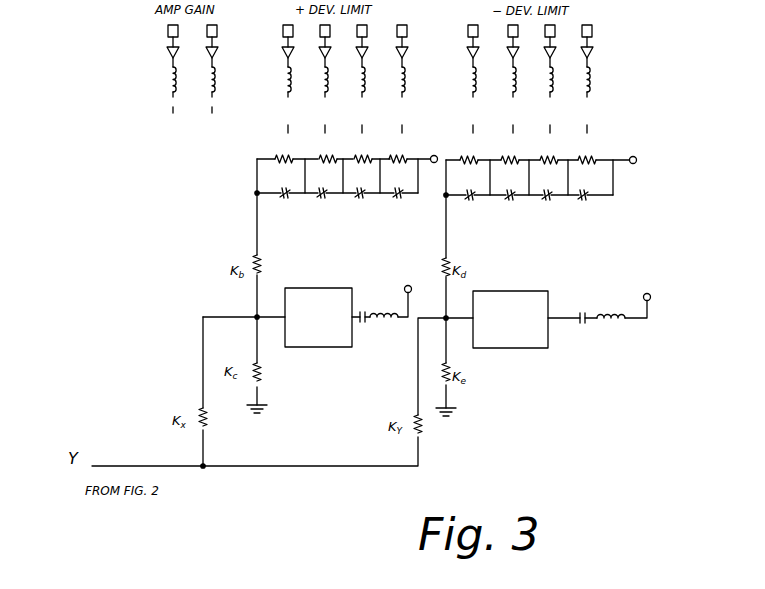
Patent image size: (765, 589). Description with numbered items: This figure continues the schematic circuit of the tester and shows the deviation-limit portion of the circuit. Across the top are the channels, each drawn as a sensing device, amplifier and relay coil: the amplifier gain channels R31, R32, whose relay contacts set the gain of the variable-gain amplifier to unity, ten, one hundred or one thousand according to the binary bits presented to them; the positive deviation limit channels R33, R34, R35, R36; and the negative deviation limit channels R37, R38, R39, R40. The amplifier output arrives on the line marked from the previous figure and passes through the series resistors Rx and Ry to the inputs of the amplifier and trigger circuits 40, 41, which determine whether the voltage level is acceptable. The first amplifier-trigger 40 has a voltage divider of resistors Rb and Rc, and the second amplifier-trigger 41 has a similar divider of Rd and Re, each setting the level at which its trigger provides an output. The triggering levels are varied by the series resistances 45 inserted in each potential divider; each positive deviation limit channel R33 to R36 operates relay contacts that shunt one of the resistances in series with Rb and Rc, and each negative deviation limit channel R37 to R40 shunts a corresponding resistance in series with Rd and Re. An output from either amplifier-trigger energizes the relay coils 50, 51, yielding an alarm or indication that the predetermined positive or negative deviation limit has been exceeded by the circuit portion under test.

The amplifier gain channel R31 is at (172, 81).
The amplifier gain channel R32 is at (212, 82).
The positive deviation limit channel R33 is at (287, 79).
The positive deviation limit channel R34 is at (324, 79).
The positive deviation limit channel R35 is at (361, 79).
The positive deviation limit channel R36 is at (401, 79).
The negative deviation limit channel R37 is at (472, 79).
The negative deviation limit channel R38 is at (512, 79).
The negative deviation limit channel R39 is at (549, 79).
The negative deviation limit channel R40 is at (586, 79).
The series resistances 45 is at (276, 160).
The amplifier and trigger circuit 40 is at (342, 288).
The amplifier and trigger circuit 41 is at (536, 291).
The relay coil 50 is at (398, 312).
The relay coil 51 is at (622, 312).